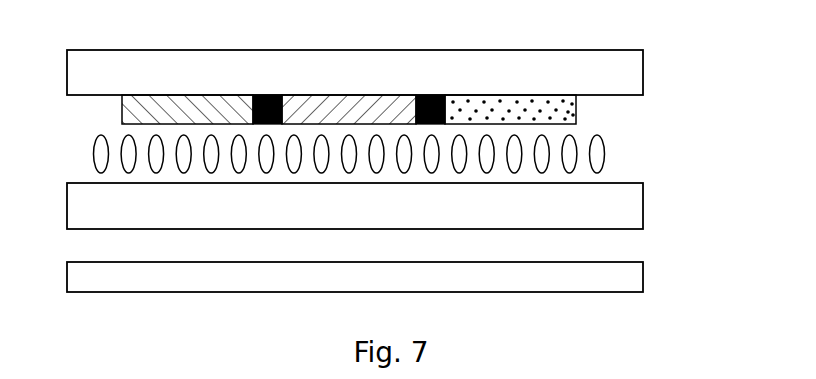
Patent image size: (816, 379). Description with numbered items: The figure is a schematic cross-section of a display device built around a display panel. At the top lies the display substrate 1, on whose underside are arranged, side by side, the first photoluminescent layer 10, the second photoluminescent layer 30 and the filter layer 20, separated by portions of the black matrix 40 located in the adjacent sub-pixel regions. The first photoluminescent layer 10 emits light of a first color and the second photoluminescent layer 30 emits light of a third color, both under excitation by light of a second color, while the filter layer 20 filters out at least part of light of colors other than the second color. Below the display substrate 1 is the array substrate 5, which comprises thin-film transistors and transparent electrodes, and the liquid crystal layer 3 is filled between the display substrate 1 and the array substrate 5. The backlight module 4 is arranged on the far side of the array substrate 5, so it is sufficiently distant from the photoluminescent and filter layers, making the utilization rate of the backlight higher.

The display substrate 1 is at (376, 73).
The first photoluminescent layer 10 is at (202, 112).
The black matrix 40 is at (266, 97).
The second photoluminescent layer 30 is at (355, 112).
The filter layer 20 is at (495, 98).
The liquid crystal layer 3 is at (605, 153).
The array substrate 5 is at (603, 207).
The backlight module 4 is at (603, 272).